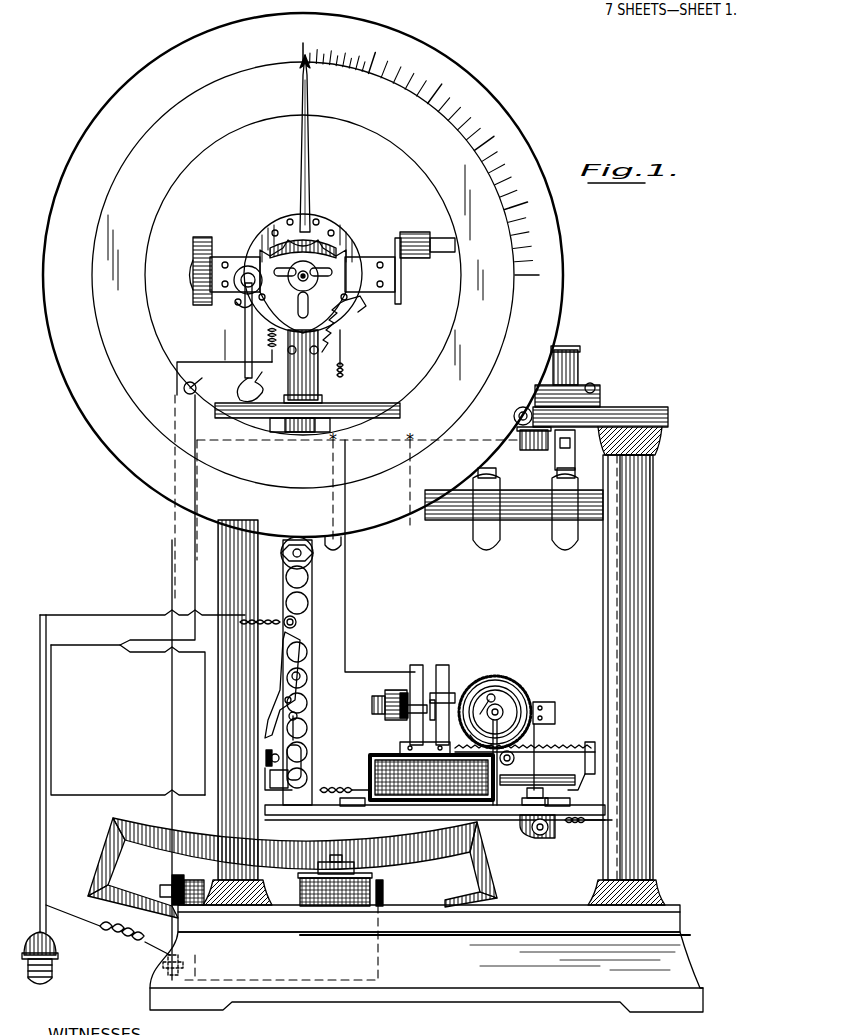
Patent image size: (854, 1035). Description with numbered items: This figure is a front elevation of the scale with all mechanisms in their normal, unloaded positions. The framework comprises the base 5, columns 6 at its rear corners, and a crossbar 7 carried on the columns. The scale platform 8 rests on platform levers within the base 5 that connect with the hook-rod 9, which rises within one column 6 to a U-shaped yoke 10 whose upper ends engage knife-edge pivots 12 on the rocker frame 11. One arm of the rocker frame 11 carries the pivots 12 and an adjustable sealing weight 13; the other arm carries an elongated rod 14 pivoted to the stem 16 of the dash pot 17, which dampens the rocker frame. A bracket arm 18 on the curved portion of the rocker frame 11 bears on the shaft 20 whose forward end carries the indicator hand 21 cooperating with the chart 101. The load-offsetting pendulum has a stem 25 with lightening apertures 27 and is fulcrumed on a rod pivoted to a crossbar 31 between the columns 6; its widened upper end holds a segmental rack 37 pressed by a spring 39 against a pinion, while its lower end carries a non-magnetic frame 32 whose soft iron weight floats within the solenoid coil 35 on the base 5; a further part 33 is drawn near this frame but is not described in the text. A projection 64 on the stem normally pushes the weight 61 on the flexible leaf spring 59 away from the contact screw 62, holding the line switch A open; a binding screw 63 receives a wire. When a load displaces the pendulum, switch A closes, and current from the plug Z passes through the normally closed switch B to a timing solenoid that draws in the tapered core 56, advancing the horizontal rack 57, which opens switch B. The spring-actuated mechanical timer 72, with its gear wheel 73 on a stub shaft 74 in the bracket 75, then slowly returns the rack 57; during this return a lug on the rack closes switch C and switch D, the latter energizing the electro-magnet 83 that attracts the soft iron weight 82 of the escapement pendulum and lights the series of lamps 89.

The chart 101 is at (490, 90).
The indicator hand 21 is at (310, 142).
The rocker frame 11 is at (252, 238).
The bracket arm 18 is at (320, 236).
The shaft 20 is at (308, 280).
The adjustable weight 13 is at (192, 252).
The knife-edge pivots 12 is at (243, 268).
The elongated rod 14 is at (450, 254).
The segmental rack 37 is at (236, 306).
The U-shaped yoke 10 is at (246, 325).
The hook-rod 9 is at (233, 383).
The spring 39 is at (352, 333).
The stem 16 is at (560, 346).
The dash pot 17 is at (580, 366).
The crossbar 7 is at (655, 412).
The columns 6 is at (650, 732).
The electric lamps 89 is at (338, 540).
The crossbar 31 is at (530, 520).
The pendulum stem 25 is at (310, 585).
The apertures 27 is at (310, 606).
The binding screw 63 is at (298, 624).
The flexible leaf spring 59 is at (300, 702).
The switch A is at (298, 717).
The weight 61 is at (303, 750).
The contact screw 62 is at (266, 757).
The projection 64 is at (270, 780).
The switch B is at (405, 742).
The switch C is at (416, 668).
The switch D is at (445, 668).
The gear wheel 73 is at (505, 680).
The mechanical timer 72 is at (490, 690).
The bracket 75 is at (503, 708).
The stub shaft 74 is at (527, 710).
The rack 57 is at (555, 746).
The tapered core 56 is at (540, 782).
The weight 82 is at (546, 792).
The electro-magnet 83 is at (540, 838).
The frame 32 is at (110, 835).
The lamp socket 33 is at (152, 912).
The solenoid coil 35 is at (384, 893).
The scale platform 8 is at (678, 922).
The base 5 is at (672, 965).
The plug Z is at (56, 950).